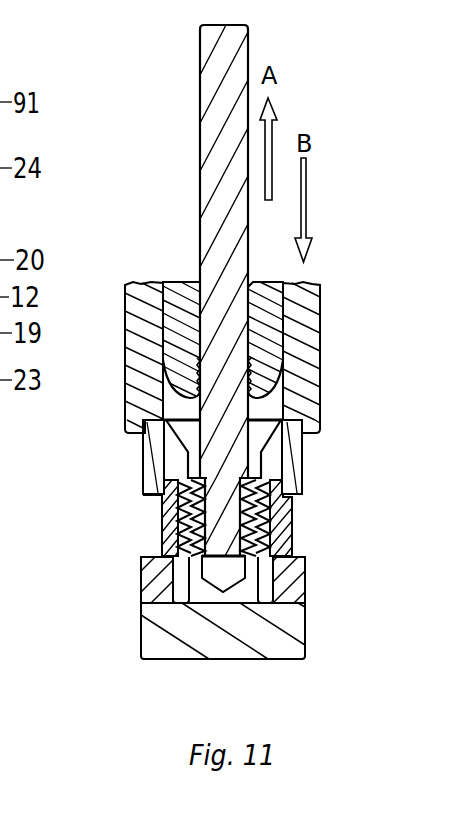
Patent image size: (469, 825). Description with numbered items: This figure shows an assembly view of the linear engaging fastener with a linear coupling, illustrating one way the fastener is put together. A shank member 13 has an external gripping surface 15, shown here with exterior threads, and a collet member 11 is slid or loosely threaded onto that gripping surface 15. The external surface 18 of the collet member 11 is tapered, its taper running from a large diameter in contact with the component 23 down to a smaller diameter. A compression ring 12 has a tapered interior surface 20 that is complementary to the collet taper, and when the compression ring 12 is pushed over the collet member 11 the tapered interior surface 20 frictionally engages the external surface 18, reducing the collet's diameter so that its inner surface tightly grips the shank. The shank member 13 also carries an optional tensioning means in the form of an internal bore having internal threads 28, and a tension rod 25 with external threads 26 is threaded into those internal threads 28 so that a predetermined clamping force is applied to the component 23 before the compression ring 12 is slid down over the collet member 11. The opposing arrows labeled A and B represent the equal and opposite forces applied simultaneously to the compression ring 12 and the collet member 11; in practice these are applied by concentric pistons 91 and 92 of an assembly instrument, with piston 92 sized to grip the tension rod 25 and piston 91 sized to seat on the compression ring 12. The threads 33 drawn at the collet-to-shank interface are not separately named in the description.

The tension rod 25 is at (217, 120).
The piston 91 is at (313, 327).
The piston 92 is at (173, 283).
The tapered interior surface 20 is at (283, 455).
The compression ring 12 is at (141, 476).
The external thread 33 is at (176, 498).
The external gripping surface 15 is at (162, 518).
The collet member 11 is at (150, 552).
The external surface 18 is at (289, 531).
The internal threads 28 is at (287, 499).
The external threads 26 is at (296, 554).
The component 23 is at (303, 592).
The shank member 13 is at (307, 635).